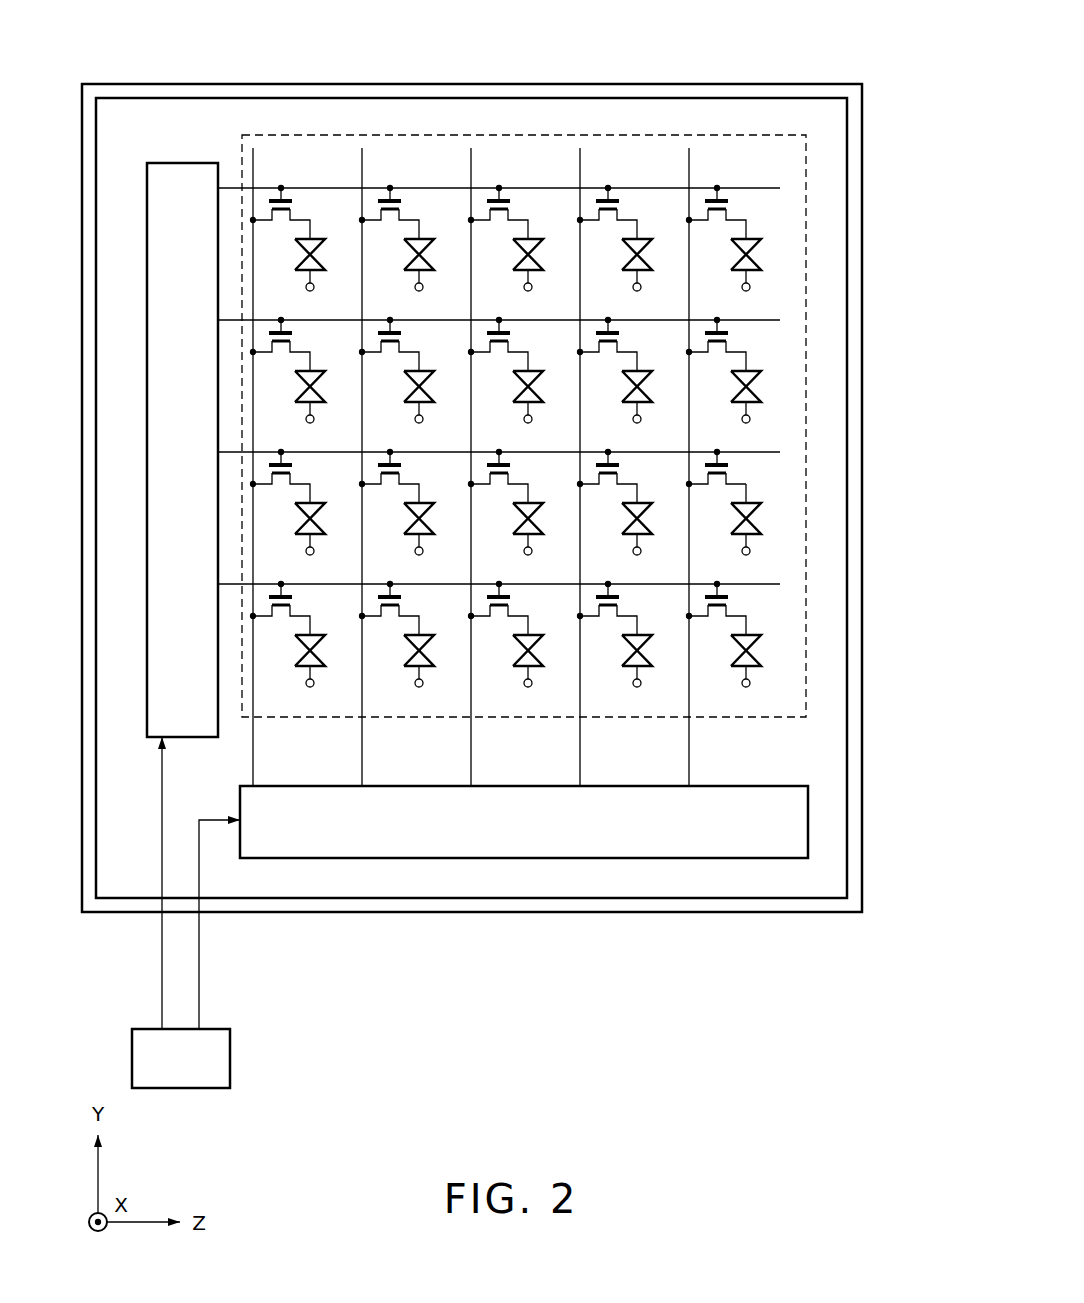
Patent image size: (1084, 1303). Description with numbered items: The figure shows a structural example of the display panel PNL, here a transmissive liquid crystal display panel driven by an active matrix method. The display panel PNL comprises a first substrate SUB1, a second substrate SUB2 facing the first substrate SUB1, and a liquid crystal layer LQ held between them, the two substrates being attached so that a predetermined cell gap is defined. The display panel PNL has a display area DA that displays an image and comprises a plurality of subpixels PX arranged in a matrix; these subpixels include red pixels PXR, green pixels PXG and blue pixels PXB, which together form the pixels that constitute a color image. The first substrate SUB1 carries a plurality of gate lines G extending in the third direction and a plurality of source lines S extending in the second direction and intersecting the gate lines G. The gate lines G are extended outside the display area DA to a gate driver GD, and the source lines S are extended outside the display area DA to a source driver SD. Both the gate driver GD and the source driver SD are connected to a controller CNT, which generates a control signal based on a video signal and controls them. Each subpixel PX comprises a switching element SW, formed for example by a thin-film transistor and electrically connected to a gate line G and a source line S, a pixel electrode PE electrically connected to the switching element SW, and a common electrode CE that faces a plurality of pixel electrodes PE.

The red pixel PXR is at (325, 215).
The green pixel PXG is at (434, 215).
The blue pixel PXB is at (543, 215).
The source line S is at (713, 160).
The gate line G is at (782, 571).
The gate driver GD is at (182, 450).
The source driver SD is at (524, 822).
The display area DA is at (806, 668).
The subpixel PX is at (803, 514).
The switching element SW is at (717, 498).
The pixel electrode PE is at (770, 482).
The liquid crystal layer LQ is at (766, 529).
The common electrode CE is at (722, 556).
The first substrate SUB1 is at (388, 913).
The second substrate SUB2 is at (503, 898).
The display panel PNL is at (664, 916).
The controller CNT is at (186, 912).